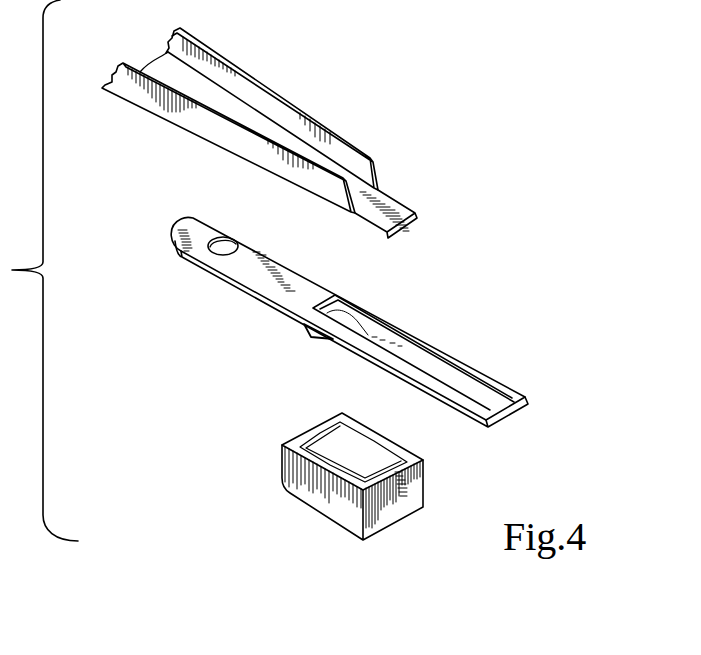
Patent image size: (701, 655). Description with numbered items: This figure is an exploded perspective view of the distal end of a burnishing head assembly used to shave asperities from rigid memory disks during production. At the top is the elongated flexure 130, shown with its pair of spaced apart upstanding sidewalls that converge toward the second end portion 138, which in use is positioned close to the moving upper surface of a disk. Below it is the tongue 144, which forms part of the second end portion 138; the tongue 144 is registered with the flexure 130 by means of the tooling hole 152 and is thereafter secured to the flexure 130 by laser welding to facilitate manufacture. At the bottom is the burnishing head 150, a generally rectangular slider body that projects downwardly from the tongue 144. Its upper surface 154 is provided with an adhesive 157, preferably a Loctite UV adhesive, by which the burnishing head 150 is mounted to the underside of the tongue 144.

The flexure 130 is at (281, 133).
The second end portion 138 is at (176, 126).
The tongue 144 is at (326, 317).
The tooling hole 152 is at (217, 249).
The upper surface 154 is at (297, 443).
The adhesive 157 is at (380, 450).
The burnishing head 150 is at (359, 468).